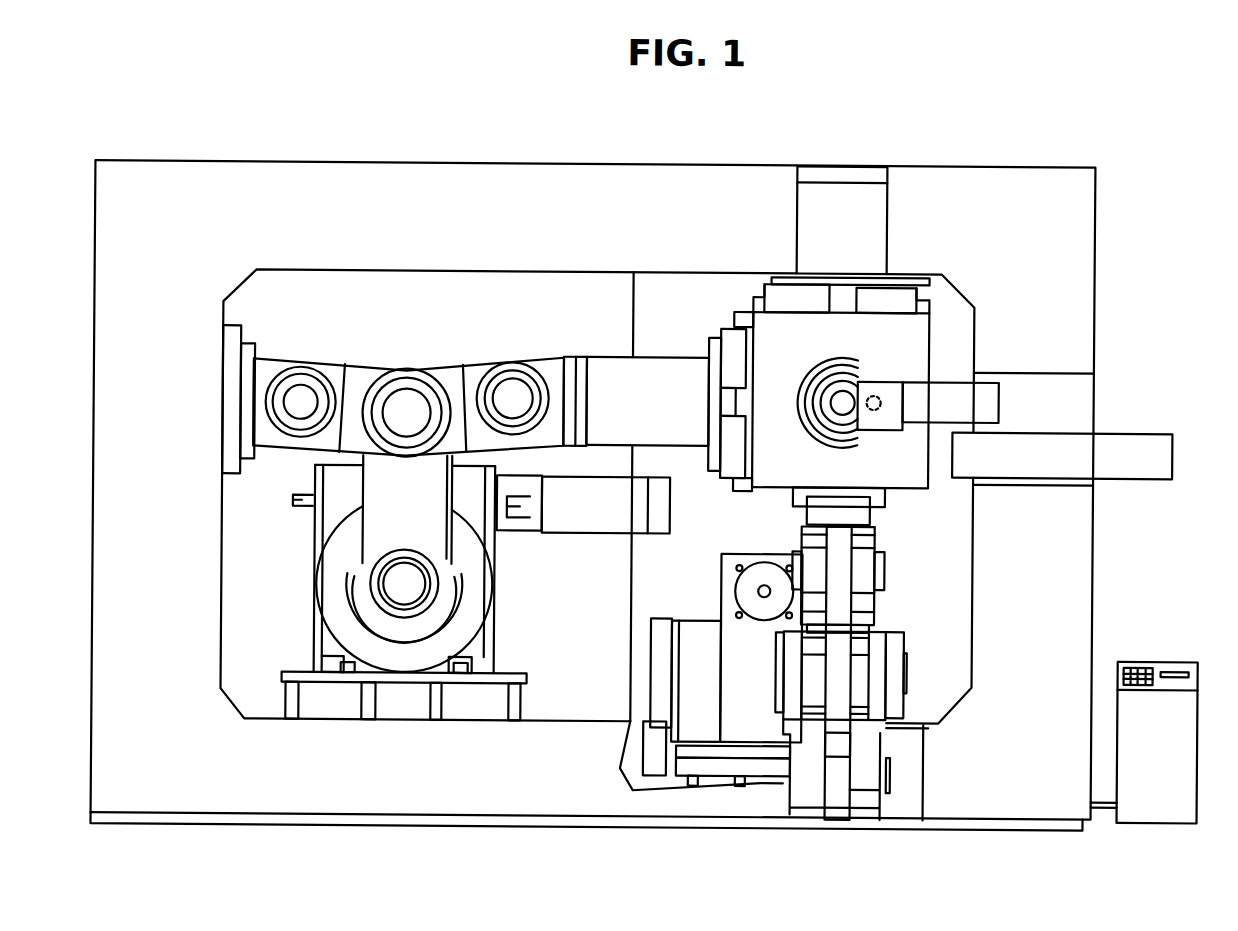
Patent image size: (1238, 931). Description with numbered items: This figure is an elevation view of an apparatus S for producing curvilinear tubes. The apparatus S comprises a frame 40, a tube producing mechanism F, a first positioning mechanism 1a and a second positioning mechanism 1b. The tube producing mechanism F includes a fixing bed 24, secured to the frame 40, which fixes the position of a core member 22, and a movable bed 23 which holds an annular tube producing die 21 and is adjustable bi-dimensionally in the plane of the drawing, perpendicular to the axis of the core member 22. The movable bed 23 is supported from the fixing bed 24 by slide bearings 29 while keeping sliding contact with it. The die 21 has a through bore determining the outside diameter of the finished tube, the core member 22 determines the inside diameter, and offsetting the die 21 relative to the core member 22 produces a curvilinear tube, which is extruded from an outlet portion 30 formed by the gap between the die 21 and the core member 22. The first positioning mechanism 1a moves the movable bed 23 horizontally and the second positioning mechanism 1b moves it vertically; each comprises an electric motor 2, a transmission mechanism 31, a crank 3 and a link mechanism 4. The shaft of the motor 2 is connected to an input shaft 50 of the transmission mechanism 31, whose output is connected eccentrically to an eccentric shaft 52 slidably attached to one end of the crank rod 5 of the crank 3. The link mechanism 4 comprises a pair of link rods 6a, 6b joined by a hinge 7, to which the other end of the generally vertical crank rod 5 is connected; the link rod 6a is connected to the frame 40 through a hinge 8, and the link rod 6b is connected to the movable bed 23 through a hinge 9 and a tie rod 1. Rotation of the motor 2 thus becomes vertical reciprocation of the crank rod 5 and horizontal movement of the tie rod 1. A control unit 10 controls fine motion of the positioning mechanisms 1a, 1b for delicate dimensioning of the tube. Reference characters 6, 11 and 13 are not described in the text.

The frame 40 is at (211, 178).
The apparatus S is at (753, 164).
The crank 3 is at (350, 507).
The hinge 8 is at (240, 366).
The link mechanism 4 is at (345, 368).
The link rod 6a is at (338, 375).
The link rod 6b is at (470, 372).
The roller 6 is at (865, 558).
The hinge 7 is at (406, 372).
The hinge 9 is at (566, 357).
The tie rod 1 is at (612, 357).
The first positioning mechanism 1a is at (315, 608).
The second positioning mechanism 1b is at (785, 784).
The crank rod 5 is at (377, 486).
The input shaft 50 is at (293, 503).
The transmission mechanism 31 is at (333, 576).
The eccentric shaft 52 is at (432, 562).
The base 11 is at (437, 706).
The electric motor 2 is at (580, 533).
The tube producing mechanism F is at (908, 343).
The fixing bed 24 is at (752, 296).
The movable bed 23 is at (790, 330).
The slide bearings 29 is at (727, 440).
The tube producing die 21 is at (822, 383).
The core member 22 is at (832, 378).
The connecting bar 13 is at (905, 383).
The outlet portion 30 is at (950, 432).
The control unit 10 is at (1160, 658).